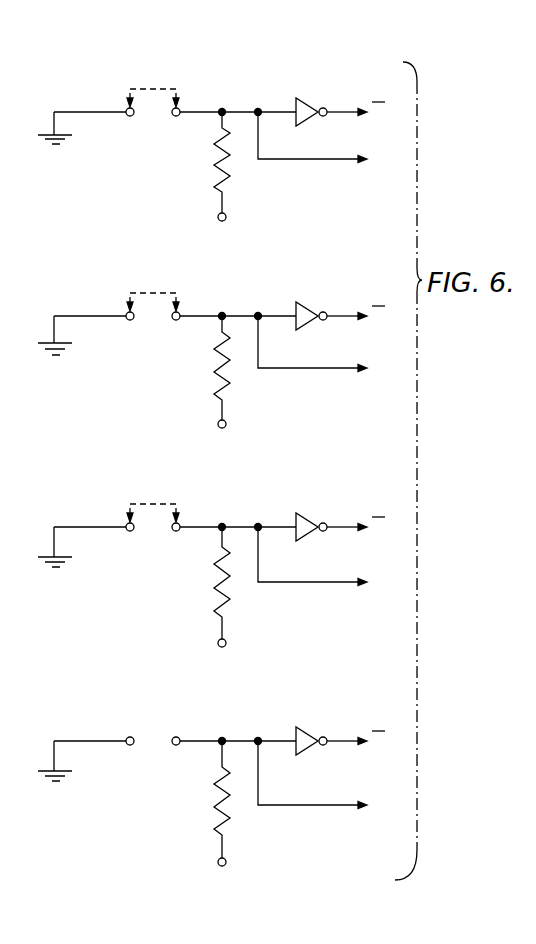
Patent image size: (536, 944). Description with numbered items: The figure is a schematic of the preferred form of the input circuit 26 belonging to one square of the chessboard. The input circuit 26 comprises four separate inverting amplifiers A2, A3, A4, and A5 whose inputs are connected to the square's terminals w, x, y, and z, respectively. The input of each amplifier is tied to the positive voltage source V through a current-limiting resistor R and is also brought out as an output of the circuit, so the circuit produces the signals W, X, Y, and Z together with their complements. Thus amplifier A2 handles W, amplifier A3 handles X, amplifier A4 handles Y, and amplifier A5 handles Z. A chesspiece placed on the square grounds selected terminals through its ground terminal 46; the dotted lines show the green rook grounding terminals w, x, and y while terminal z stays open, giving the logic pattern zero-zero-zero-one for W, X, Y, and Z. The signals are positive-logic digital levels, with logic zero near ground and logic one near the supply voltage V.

The input circuit 26 is at (169, 881).
The terminal 46 is at (131, 117).
The inverting amplifier A2 is at (311, 103).
The inverting amplifier A3 is at (311, 307).
The inverting amplifier A4 is at (311, 518).
The inverting amplifier A5 is at (311, 732).